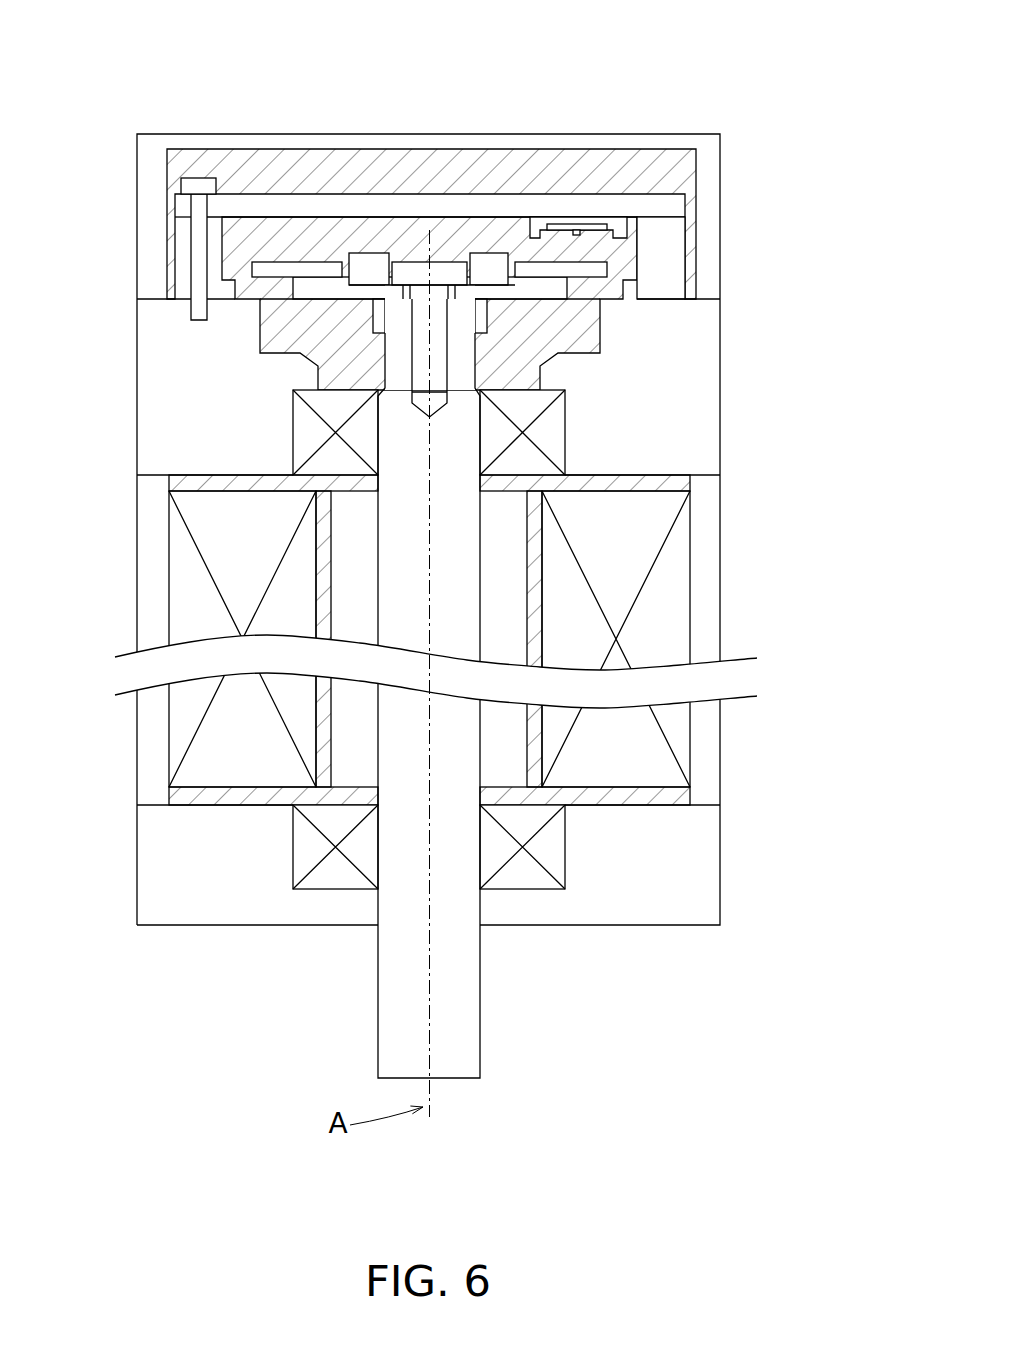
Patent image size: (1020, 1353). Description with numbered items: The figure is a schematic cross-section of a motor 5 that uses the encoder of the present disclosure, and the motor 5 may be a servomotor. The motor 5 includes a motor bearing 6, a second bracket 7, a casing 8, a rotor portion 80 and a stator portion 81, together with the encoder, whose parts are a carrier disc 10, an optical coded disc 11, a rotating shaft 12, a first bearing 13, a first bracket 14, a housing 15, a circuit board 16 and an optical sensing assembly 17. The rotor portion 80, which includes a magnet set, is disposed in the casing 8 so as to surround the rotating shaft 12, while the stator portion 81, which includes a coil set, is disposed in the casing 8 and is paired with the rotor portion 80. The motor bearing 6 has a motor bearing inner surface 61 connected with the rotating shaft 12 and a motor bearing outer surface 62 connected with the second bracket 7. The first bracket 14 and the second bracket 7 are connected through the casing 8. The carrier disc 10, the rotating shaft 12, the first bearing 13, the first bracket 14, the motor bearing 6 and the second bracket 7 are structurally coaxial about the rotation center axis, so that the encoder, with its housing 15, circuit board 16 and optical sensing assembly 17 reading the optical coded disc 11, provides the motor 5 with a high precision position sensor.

The motor 5 is at (788, 33).
The circuit board 16 is at (436, 205).
The optical sensing assembly 17 is at (577, 217).
The housing 15 is at (665, 237).
The optical coded disc 11 is at (600, 270).
The carrier disc 10 is at (550, 288).
The first bearing 13 is at (553, 433).
The first bracket 14 is at (167, 377).
The casing 8 is at (486, 640).
The stator portion 81 is at (667, 633).
The rotor portion 80 is at (507, 743).
The second bracket 7 is at (157, 850).
The motor bearing outer surface 62 is at (293, 845).
The motor bearing inner surface 61 is at (378, 845).
The motor bearing 6 is at (527, 890).
The rotating shaft 12 is at (430, 670).